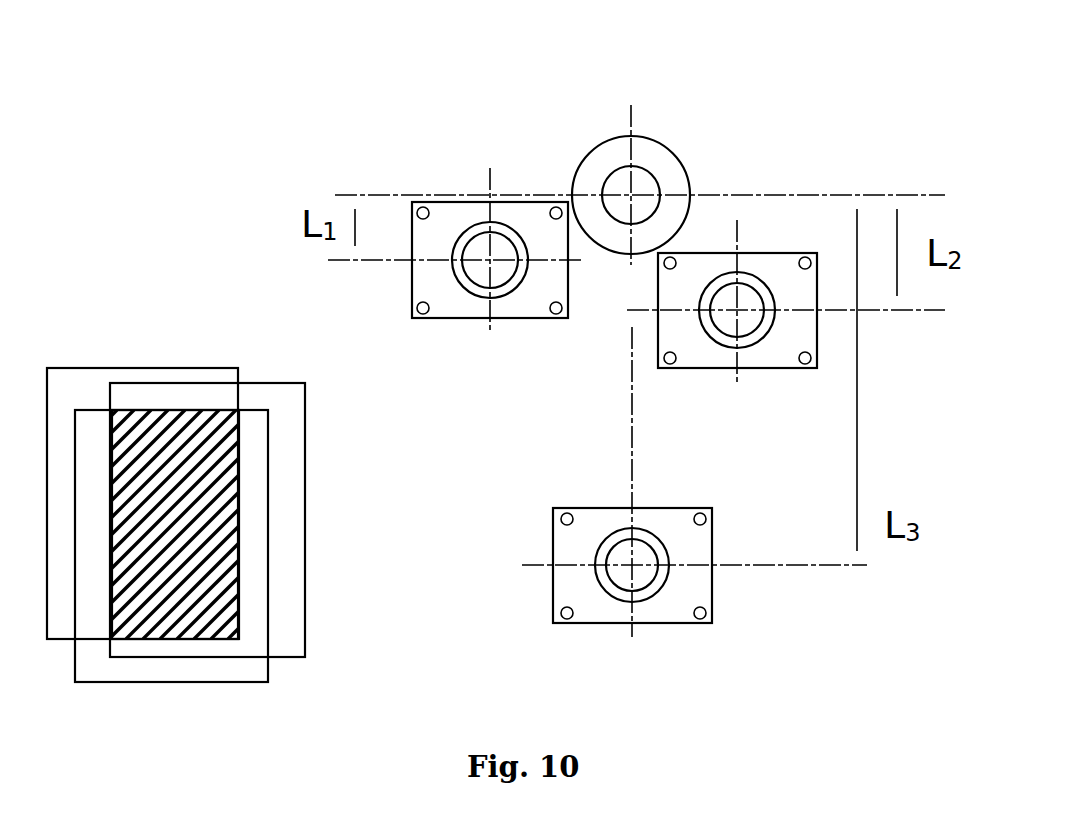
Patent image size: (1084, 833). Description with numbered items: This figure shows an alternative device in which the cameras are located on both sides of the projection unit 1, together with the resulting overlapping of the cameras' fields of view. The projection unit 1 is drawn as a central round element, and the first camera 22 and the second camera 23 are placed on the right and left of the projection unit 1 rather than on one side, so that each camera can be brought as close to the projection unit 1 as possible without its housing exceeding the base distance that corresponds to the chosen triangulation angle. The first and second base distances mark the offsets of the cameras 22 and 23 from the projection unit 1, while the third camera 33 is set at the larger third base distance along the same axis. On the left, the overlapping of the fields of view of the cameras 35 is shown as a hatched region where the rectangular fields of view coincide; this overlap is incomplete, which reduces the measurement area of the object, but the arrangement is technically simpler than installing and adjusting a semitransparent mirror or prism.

The projection unit 1 is at (607, 133).
The first camera 22 is at (445, 196).
The second camera 23 is at (768, 248).
The third camera 33 is at (698, 630).
The overlapping of the fields of view of the cameras 35 is at (150, 362).